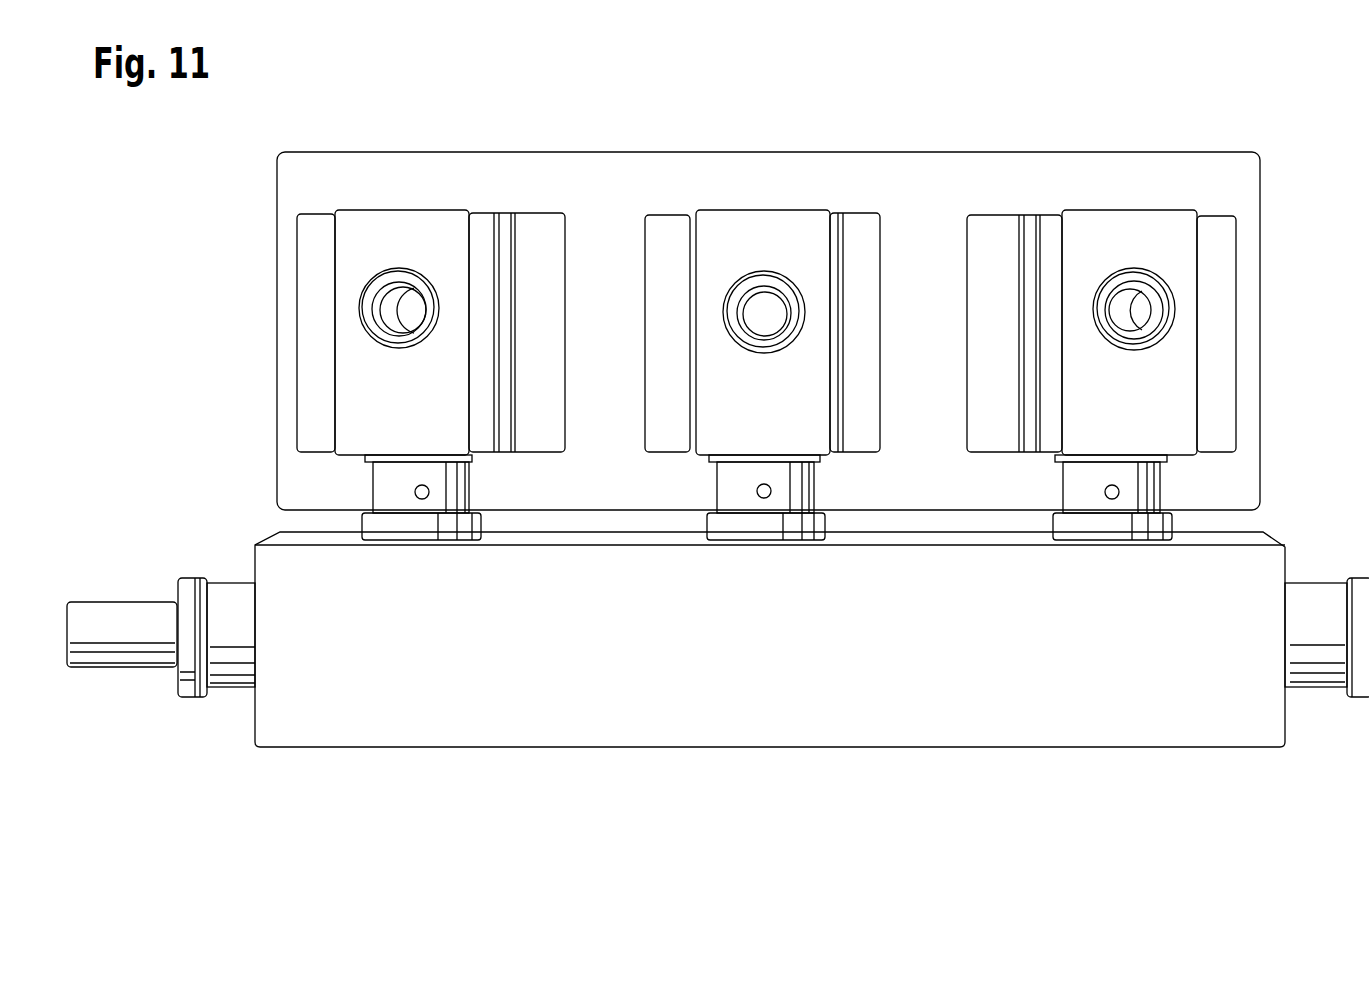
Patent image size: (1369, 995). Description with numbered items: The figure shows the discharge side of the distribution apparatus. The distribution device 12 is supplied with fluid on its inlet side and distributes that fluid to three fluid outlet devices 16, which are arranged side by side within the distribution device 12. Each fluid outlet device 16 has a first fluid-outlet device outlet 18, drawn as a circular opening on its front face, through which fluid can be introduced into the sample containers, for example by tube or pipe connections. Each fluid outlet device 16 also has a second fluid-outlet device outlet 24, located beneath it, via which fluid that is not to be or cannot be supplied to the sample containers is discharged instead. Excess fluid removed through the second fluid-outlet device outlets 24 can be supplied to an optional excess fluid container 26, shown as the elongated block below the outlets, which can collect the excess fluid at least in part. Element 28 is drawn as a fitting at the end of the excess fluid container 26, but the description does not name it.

The distribution device 12 is at (1245, 273).
The fluid outlet device 16 is at (486, 342).
The first fluid-outlet device outlet 18 is at (394, 313).
The second fluid-outlet device outlet 24 is at (450, 492).
The excess fluid container 26 is at (645, 643).
The inlet pipe fitting 28 is at (118, 622).